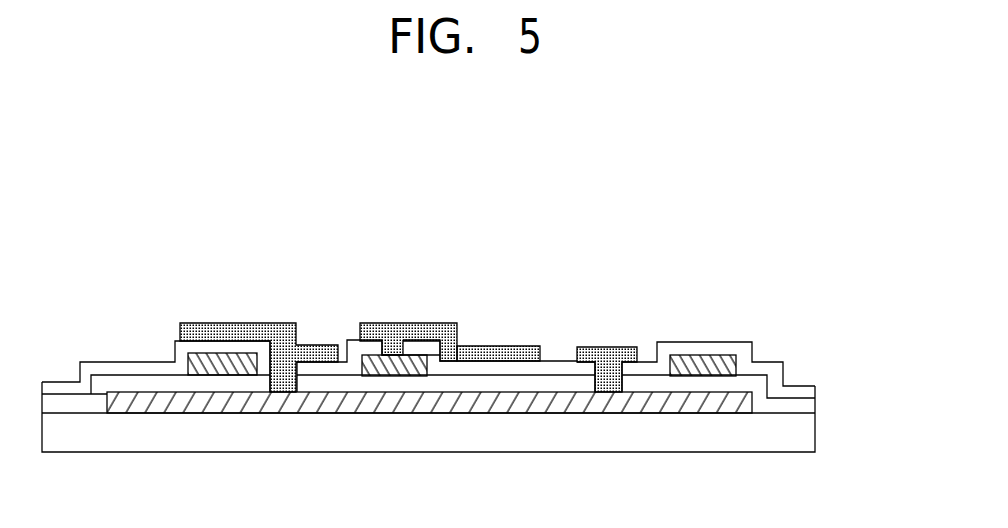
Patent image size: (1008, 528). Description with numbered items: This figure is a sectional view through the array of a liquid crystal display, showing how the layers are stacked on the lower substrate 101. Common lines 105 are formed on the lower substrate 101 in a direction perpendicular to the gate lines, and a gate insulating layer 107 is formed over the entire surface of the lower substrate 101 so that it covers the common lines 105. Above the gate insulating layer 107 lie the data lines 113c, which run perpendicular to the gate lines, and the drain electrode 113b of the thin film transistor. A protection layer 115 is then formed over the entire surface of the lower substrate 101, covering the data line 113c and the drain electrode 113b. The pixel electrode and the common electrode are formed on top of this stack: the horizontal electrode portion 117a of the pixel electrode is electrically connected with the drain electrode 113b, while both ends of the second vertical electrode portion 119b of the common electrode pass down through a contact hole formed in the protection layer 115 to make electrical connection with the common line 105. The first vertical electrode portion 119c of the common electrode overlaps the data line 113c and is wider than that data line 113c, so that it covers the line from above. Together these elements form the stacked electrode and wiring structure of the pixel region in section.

The lower substrate 101 is at (815, 439).
The common line 105 is at (505, 413).
The gate insulating layer 107 is at (815, 407).
The drain electrode 113b is at (393, 355).
The data line 113c is at (236, 353).
The protection layer 115 is at (815, 387).
The horizontal electrode portion of the pixel electrode 117a is at (491, 346).
The second vertical electrode portion of the common electrode 119b is at (317, 345).
The first vertical electrode portion of the common electrode 119c is at (193, 323).